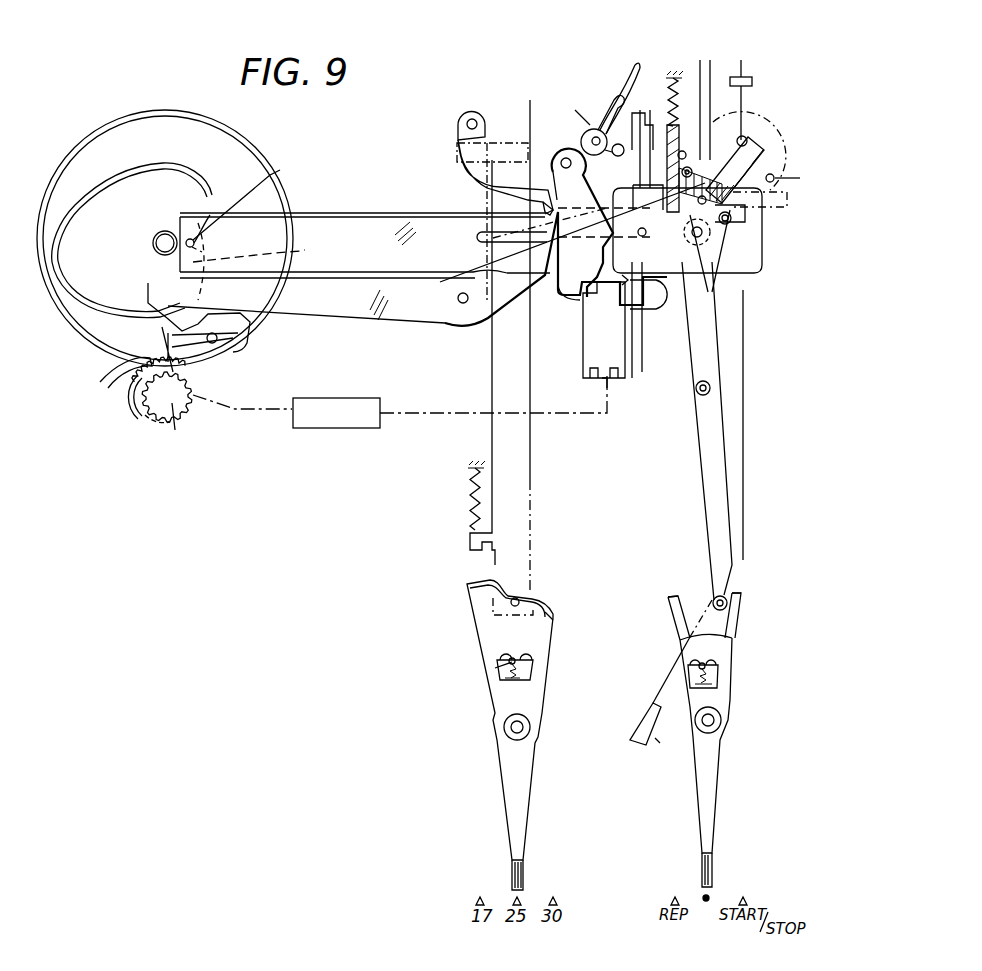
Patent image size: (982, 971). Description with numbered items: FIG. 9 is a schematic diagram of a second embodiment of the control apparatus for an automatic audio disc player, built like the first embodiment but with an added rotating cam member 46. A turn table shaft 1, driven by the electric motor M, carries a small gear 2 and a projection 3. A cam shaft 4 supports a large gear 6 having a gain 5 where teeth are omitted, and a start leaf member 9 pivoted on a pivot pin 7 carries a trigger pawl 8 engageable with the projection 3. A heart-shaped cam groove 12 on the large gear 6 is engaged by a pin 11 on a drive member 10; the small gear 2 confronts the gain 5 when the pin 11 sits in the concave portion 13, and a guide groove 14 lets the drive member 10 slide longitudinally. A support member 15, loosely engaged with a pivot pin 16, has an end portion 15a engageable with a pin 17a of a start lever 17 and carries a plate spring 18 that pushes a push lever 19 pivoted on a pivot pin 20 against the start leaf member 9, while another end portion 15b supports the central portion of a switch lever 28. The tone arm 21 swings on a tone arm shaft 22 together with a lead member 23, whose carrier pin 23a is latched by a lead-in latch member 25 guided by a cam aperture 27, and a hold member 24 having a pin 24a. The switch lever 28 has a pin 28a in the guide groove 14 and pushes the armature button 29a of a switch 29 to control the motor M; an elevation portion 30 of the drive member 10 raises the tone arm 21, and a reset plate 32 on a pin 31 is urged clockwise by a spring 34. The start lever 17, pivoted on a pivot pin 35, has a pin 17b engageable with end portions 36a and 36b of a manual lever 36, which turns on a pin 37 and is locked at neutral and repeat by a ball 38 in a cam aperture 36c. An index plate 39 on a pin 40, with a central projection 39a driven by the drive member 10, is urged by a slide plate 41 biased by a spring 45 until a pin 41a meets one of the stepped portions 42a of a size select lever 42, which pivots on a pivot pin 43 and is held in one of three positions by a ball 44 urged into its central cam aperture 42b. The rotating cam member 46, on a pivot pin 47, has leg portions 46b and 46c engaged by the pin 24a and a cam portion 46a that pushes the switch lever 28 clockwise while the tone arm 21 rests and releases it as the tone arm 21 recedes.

The turn table shaft 1 is at (167, 429).
The small gear 2 is at (190, 401).
The projection 3 is at (147, 420).
The cam shaft 4 is at (160, 246).
The gain 5 is at (145, 380).
The large gear 6 is at (232, 150).
The pivot pin 7 is at (215, 343).
The trigger pawl 8 is at (128, 368).
The start leaf member 9 is at (240, 330).
The drive member 10 is at (360, 213).
The pin 11 is at (240, 197).
The heart-shaped cam groove 12 is at (100, 200).
The concave portion 13 is at (259, 261).
The guide groove 14 is at (478, 233).
The support member 15 is at (712, 110).
The end portion 15a is at (701, 110).
The rod end 15b is at (642, 350).
The pivot pin 16 is at (720, 250).
The start lever 17 is at (712, 450).
The pin 17a is at (666, 128).
The pin 17b is at (727, 603).
The plate spring 18 is at (590, 300).
The push lever 19 is at (348, 310).
The pivot pin 20 is at (461, 304).
The tone arm 21 is at (730, 323).
The tone arm shaft 22 is at (745, 139).
The lead member 23 is at (764, 148).
The carrier pin 23a is at (800, 178).
The hold member 24 is at (745, 100).
The pin 24a is at (640, 110).
The lead-in latch member 25 is at (712, 232).
The cam aperture 27 is at (770, 205).
The switch lever 28 is at (657, 300).
The pin 28a is at (580, 300).
The mechanically-operated switch 29 is at (588, 376).
The armature button 29a is at (622, 285).
The elevation portion 30 is at (762, 260).
The pin 31 is at (745, 225).
The reset plate 32 is at (775, 176).
The spring 34 is at (671, 78).
The pivot pin 35 is at (712, 388).
The manual lever 36 is at (722, 660).
The end portion 36a is at (730, 626).
The end portion 36b is at (680, 628).
The cam aperture 36c is at (718, 682).
The pin 37 is at (716, 726).
The ball 38 is at (690, 672).
The index plate 39 is at (472, 119).
The central projection 39a is at (543, 206).
The pin 40 is at (563, 159).
The slide plate 41 is at (531, 450).
The pin 41a is at (520, 603).
The size select lever 42 is at (532, 697).
The stepped portions 42a is at (553, 622).
The pointer pocket 42b is at (532, 665).
The pivot pin 43 is at (520, 732).
The ball 44 is at (495, 668).
The spring 45 is at (470, 495).
The rotating cam member 46 is at (592, 129).
The cam portion 46a is at (610, 145).
The leg portion 46b is at (628, 85).
The leg portion 46c is at (578, 115).
The pivot pin 47 is at (606, 132).
The electric motor M is at (300, 430).